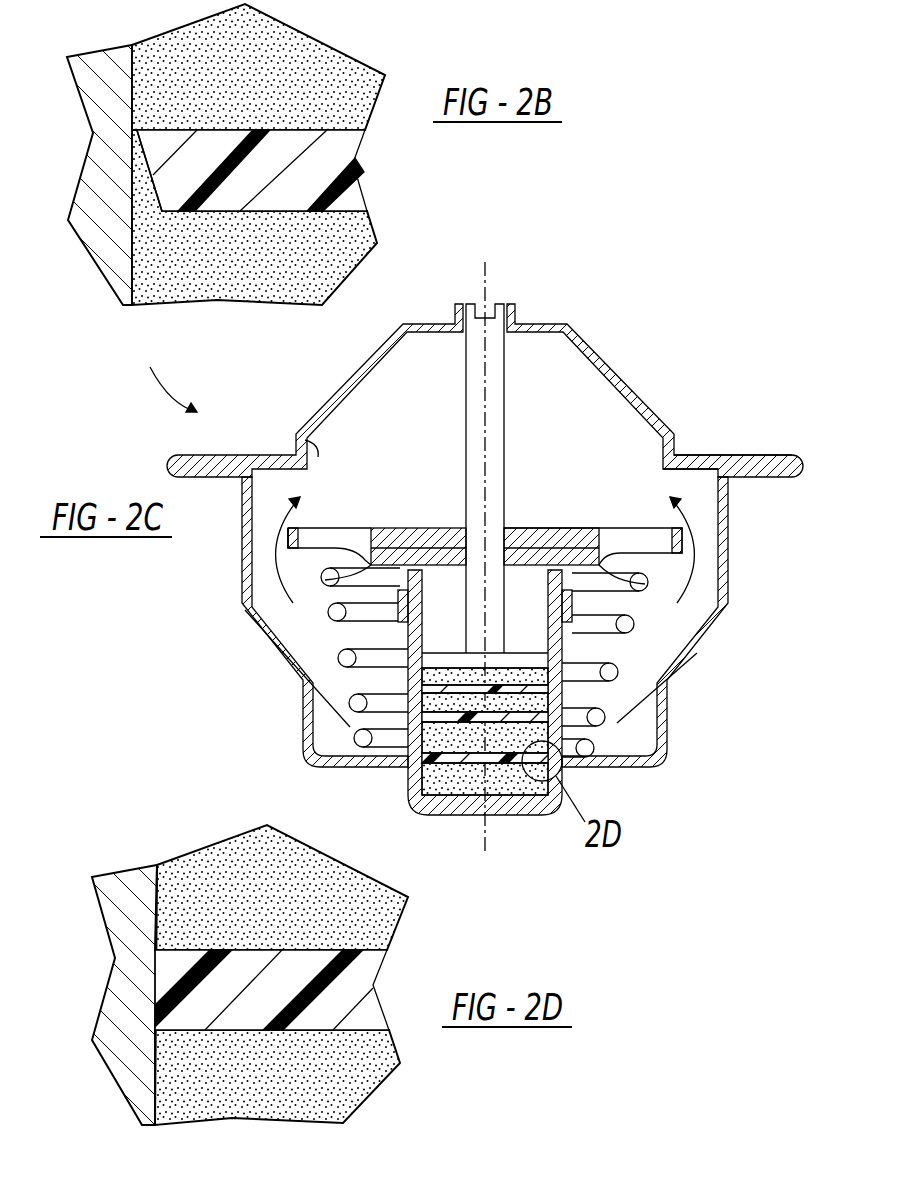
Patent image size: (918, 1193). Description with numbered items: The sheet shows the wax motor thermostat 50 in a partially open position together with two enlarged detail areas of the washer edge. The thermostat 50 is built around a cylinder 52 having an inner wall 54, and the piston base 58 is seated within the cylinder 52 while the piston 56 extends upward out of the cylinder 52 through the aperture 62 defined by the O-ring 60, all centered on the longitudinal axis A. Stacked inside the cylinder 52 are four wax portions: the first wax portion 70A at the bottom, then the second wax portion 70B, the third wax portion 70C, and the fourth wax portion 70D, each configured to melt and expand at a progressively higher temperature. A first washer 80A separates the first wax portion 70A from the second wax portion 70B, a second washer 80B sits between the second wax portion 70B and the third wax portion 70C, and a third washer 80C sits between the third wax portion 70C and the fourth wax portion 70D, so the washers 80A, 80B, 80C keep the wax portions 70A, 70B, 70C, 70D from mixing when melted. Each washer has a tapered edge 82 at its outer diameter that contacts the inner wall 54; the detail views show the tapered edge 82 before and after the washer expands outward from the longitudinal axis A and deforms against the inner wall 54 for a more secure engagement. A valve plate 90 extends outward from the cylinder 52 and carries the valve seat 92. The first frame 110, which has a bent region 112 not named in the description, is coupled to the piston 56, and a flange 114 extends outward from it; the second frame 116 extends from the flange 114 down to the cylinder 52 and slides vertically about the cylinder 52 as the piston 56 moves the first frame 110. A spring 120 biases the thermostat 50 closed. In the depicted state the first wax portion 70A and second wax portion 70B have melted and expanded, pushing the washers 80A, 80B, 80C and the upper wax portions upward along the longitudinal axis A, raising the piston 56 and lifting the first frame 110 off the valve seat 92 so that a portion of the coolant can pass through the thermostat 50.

In FIG. 2C, the wax motor thermostat 50 is at (167, 372).
In FIG. 2C, the cylinder 52 is at (500, 805).
In FIG. 2B, the inner wall 54 is at (143, 236).
In FIG. 2C, the inner wall 54 is at (682, 593).
In FIG. 2D, the inner wall 54 is at (162, 1052).
In FIG. 2C, the piston 56 is at (490, 465).
In FIG. 2C, the piston base 58 is at (455, 652).
In FIG. 2C, the O-ring 60 is at (535, 515).
In FIG. 2C, the aperture 62 is at (505, 527).
In FIG. 2B, the first wax portion 70A is at (322, 273).
In FIG. 2C, the first wax portion 70A is at (530, 785).
In FIG. 2D, the first wax portion 70A is at (343, 1092).
In FIG. 2B, the second wax portion 70B is at (317, 75).
In FIG. 2C, the second wax portion 70B is at (560, 740).
In FIG. 2D, the second wax portion 70B is at (233, 872).
In FIG. 2C, the third wax portion 70C is at (548, 703).
In FIG. 2C, the fourth wax portion 70D is at (548, 675).
In FIG. 2B, the first washer 80A is at (352, 195).
In FIG. 2C, the first washer 80A is at (460, 760).
In FIG. 2D, the first washer 80A is at (367, 975).
In FIG. 2C, the second washer 80B is at (450, 715).
In FIG. 2C, the third washer 80C is at (450, 687).
In FIG. 2B, the tapered edge 82 is at (153, 192).
In FIG. 2D, the tapered edge 82 is at (153, 990).
In FIG. 2C, the valve plate 90 is at (297, 560).
In FIG. 2C, the valve seat 92 is at (310, 510).
In FIG. 2C, the first frame 110 is at (342, 383).
In FIG. 2C, the frame shoulder 112 is at (307, 432).
In FIG. 2C, the flange 114 is at (787, 460).
In FIG. 2C, the second frame 116 is at (242, 640).
In FIG. 2C, the spring 120 is at (328, 614).
In FIG. 2C, the longitudinal axis A is at (487, 272).